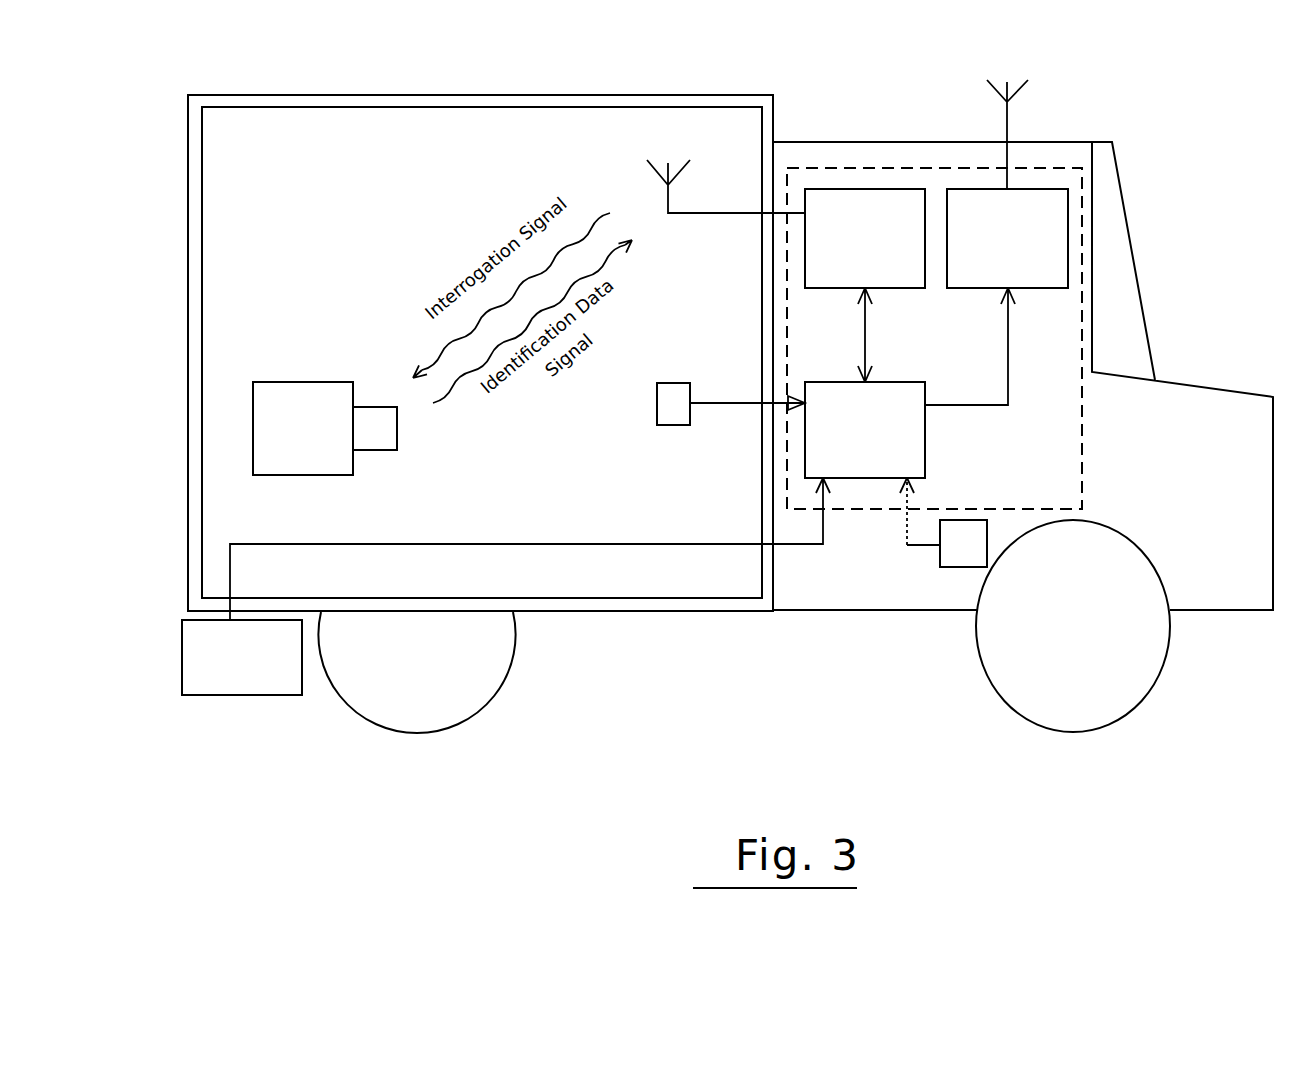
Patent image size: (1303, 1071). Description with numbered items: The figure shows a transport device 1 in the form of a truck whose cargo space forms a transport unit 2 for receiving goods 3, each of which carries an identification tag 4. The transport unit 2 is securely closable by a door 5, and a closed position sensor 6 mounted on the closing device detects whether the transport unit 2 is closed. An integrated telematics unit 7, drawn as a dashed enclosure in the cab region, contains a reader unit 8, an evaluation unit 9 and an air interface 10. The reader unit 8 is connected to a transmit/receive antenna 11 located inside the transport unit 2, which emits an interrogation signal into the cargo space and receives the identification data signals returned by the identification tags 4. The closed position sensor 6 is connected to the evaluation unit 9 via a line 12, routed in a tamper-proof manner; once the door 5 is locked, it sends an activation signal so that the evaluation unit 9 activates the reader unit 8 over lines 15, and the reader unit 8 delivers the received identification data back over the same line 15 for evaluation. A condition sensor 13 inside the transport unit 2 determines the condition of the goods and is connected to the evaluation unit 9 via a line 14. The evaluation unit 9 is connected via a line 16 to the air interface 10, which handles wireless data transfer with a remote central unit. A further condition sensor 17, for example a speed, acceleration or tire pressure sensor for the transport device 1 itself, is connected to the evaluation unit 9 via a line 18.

The transport device 1 is at (1186, 497).
The transport unit 2 is at (570, 100).
The goods 3 is at (291, 466).
The identification tags 4 is at (367, 444).
The door 5 is at (190, 473).
The closed position sensor 6 is at (270, 692).
The telematics unit 7 is at (1060, 495).
The reader unit 8 is at (857, 282).
The evaluation unit 9 is at (895, 470).
The air interface 10 is at (1057, 284).
The transmit/receive antenna 11 is at (672, 195).
The line 12 is at (610, 545).
The condition sensor 13 is at (673, 425).
The line 14 is at (725, 398).
The lines 15 is at (868, 335).
The line 16 is at (1010, 355).
The condition sensor 17 is at (976, 559).
The line 18 is at (922, 547).